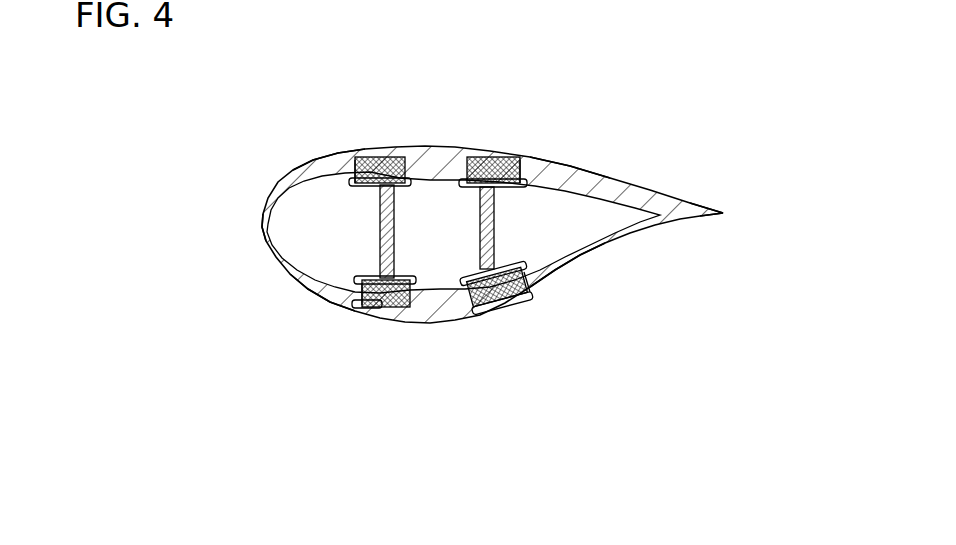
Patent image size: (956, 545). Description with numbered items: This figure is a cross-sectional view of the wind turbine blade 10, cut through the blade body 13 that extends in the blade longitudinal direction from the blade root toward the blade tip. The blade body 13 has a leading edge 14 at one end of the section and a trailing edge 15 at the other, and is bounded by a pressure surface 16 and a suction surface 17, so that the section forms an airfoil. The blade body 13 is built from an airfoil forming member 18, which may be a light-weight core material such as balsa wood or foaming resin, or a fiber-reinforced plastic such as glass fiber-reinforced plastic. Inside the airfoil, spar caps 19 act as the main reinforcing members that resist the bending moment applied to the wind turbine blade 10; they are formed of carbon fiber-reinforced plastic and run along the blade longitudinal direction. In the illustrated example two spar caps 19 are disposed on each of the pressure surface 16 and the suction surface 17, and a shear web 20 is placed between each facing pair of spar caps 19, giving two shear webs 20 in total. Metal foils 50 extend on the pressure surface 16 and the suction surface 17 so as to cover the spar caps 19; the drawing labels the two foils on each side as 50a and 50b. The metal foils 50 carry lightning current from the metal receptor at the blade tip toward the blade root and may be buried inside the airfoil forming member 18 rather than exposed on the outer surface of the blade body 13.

The wind turbine blade 10 is at (622, 152).
The blade body 13 is at (561, 151).
The leading edge 14 is at (262, 228).
The trailing edge 15 is at (727, 215).
The pressure surface 16 is at (330, 308).
The suction surface 17 is at (330, 151).
The airfoil forming member 18 is at (561, 256).
The spar cap 19 is at (350, 189).
The shear web 20 is at (479, 214).
The metal foil 50 is at (442, 235).
The first spar cap 50a is at (396, 147).
The second spar cap 50b is at (488, 233).